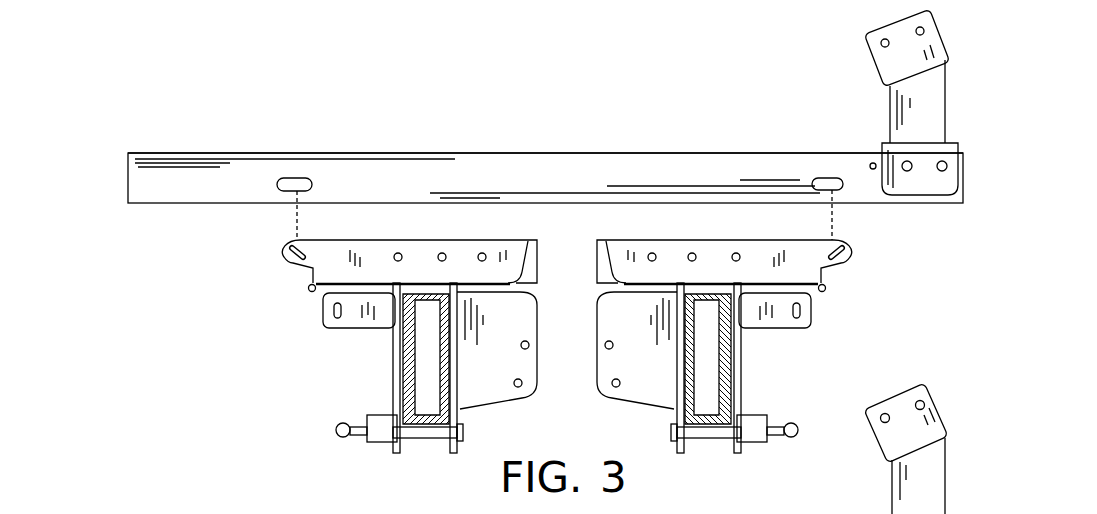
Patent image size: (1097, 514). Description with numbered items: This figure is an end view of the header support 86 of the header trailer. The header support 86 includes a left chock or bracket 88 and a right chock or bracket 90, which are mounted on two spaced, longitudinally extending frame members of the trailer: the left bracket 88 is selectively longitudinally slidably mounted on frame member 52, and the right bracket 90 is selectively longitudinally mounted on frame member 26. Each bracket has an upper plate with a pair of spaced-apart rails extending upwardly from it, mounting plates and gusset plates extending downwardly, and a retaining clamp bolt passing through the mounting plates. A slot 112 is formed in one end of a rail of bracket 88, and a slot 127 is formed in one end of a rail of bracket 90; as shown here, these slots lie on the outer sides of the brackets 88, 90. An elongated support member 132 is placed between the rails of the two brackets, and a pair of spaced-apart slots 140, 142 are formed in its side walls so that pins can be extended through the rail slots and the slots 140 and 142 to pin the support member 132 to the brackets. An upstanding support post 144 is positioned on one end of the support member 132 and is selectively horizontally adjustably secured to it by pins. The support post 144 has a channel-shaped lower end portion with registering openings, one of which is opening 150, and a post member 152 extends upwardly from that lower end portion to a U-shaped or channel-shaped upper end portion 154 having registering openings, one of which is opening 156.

The frame member 26 is at (422, 366).
The frame member 52 is at (715, 386).
The header support 86 is at (565, 128).
The left chock or bracket 88 is at (772, 361).
The right chock or bracket 90 is at (376, 355).
The slot 112 is at (850, 260).
The slot 127 is at (292, 266).
The elongated support member 132 is at (398, 152).
The slot 140 is at (818, 181).
The slot 142 is at (283, 181).
The upstanding support post 144 is at (910, 261).
The registering opening 150 is at (947, 166).
The post member 152 is at (935, 125).
The upper end portion 154 is at (930, 43).
The registering opening 156 is at (881, 43).